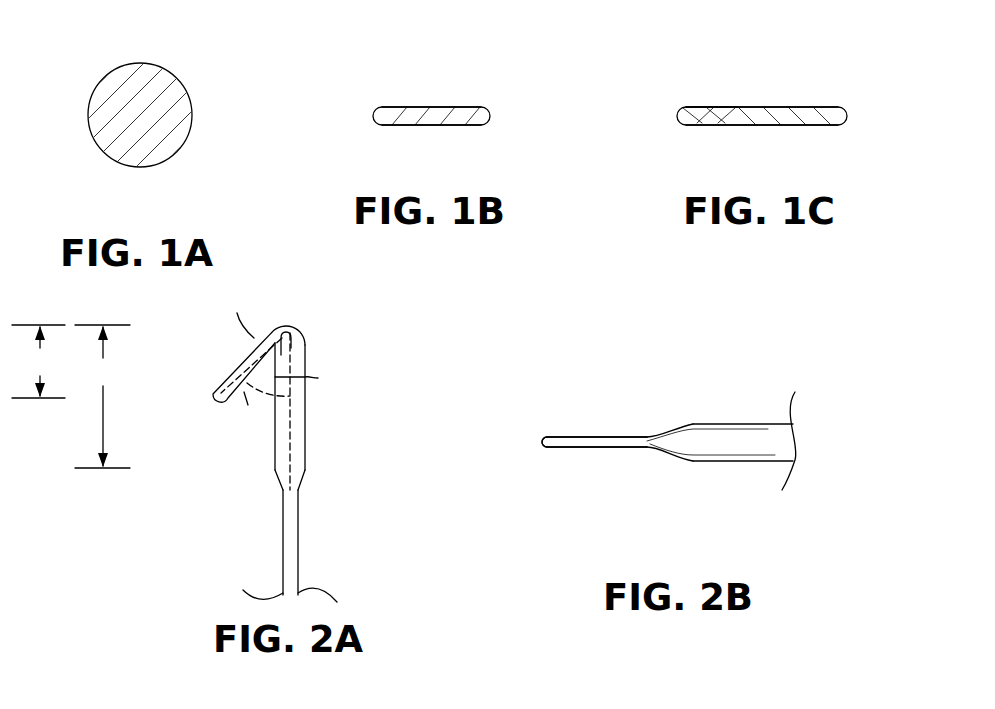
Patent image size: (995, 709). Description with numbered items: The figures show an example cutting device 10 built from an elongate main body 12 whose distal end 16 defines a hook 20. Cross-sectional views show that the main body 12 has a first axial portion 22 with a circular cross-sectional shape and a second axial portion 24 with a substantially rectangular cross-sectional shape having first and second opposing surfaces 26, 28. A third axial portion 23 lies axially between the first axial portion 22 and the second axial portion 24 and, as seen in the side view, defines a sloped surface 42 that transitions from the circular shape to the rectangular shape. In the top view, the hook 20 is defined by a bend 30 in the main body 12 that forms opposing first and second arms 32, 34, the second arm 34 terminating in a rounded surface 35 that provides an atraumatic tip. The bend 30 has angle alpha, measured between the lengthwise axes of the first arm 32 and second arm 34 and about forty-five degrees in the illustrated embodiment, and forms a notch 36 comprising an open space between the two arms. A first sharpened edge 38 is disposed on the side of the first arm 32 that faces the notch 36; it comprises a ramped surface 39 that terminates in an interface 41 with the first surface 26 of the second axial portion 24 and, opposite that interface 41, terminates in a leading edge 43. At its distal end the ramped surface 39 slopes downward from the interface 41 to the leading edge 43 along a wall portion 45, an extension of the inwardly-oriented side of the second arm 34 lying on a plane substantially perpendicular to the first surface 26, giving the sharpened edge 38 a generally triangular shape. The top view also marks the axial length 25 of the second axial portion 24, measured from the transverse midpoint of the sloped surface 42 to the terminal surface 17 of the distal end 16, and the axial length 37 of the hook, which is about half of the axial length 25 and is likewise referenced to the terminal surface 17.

In FIG. 1A, the cutting device 10 is at (134, 111).
In FIG. 1B, the cutting device 10 is at (438, 93).
In FIG. 1C, the cutting device 10 is at (754, 93).
In FIG. 2A, the cutting device 10 is at (214, 433).
In FIG. 2B, the cutting device 10 is at (634, 424).
In FIG. 1A, the main body 12 is at (168, 157).
In FIG. 1B, the main body 12 is at (438, 109).
In FIG. 1C, the main body 12 is at (754, 109).
In FIG. 2A, the main body 12 is at (300, 567).
In FIG. 2B, the main body 12 is at (753, 424).
In FIG. 2A, the distal end 16 is at (307, 460).
In FIG. 2B, the distal end 16 is at (698, 423).
In FIG. 2A, the terminal surface 17 is at (289, 324).
In FIG. 2B, the terminal surface 17 is at (540, 444).
In FIG. 1C, the hook 20 is at (668, 97).
In FIG. 2A, the hook 20 is at (204, 403).
In FIG. 2B, the hook 20 is at (564, 476).
In FIG. 1A, the first axial portion 22 is at (87, 158).
In FIG. 2A, the first axial portion 22 is at (276, 572).
In FIG. 2B, the first axial portion 22 is at (763, 468).
In FIG. 2A, the third axial portion 23 is at (280, 477).
In FIG. 2B, the third axial portion 23 is at (693, 468).
In FIG. 1B, the second axial portion 24 is at (398, 140).
In FIG. 1C, the second axial portion 24 is at (710, 135).
In FIG. 2A, the second axial portion 24 is at (272, 450).
In FIG. 2B, the second axial portion 24 is at (617, 491).
In FIG. 2A, the axial length of the second axial portion 25 is at (102, 396).
In FIG. 1B, the first surface 26 is at (430, 107).
In FIG. 1C, the first surface 26 is at (790, 107).
In FIG. 2B, the first surface 26 is at (603, 436).
In FIG. 1B, the second surface 28 is at (450, 126).
In FIG. 1C, the second surface 28 is at (788, 126).
In FIG. 2B, the second surface 28 is at (607, 448).
In FIG. 2A, the bend 30 is at (282, 331).
In FIG. 2B, the bend 30 is at (542, 436).
In FIG. 2A, the first arm 32 is at (307, 412).
In FIG. 2A, the second arm 34 is at (240, 338).
In FIG. 2B, the second arm 34 is at (560, 448).
In FIG. 2A, the rounded surface 35 is at (207, 393).
In FIG. 2A, the notch 36 is at (225, 410).
In FIG. 2B, the notch 36 is at (665, 468).
In FIG. 2A, the axial length of the hook 37 is at (38, 361).
In FIG. 2A, the first sharpened edge 38 is at (280, 352).
In FIG. 2A, the ramped surface 39 is at (282, 345).
In FIG. 2A, the interface 41 is at (290, 365).
In FIG. 2B, the sloped surface 42 is at (677, 427).
In FIG. 2A, the leading edge 43 is at (275, 355).
In FIG. 2A, the wall portion 45 is at (275, 327).